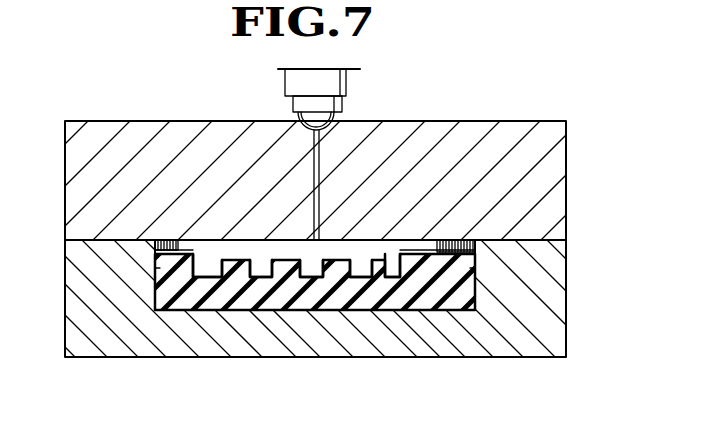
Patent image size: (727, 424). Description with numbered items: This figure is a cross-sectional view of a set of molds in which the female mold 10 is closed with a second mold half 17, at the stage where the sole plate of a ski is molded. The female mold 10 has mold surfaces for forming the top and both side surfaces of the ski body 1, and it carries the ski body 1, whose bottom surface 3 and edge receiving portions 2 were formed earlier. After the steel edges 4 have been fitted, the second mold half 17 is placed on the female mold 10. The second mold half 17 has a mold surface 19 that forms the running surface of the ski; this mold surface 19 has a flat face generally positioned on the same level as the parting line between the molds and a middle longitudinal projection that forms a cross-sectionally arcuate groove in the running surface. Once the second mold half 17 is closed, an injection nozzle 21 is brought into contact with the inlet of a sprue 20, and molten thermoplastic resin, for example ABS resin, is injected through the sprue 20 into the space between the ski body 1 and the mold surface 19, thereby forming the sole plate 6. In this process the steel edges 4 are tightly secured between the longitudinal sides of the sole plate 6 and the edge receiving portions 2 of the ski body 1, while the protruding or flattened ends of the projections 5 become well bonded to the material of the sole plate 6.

The ski body 1 is at (322, 292).
The edge receiving portions 2 is at (153, 267).
The bottom surface 3 is at (260, 245).
The steel edges 4 is at (153, 264).
The projections 5 is at (178, 242).
The sole plate 6 is at (360, 240).
The female mold 10 is at (160, 330).
The second mold half 17 is at (162, 145).
The mold surface 19 is at (388, 240).
The sprue 20 is at (312, 152).
The injection nozzle 21 is at (332, 105).